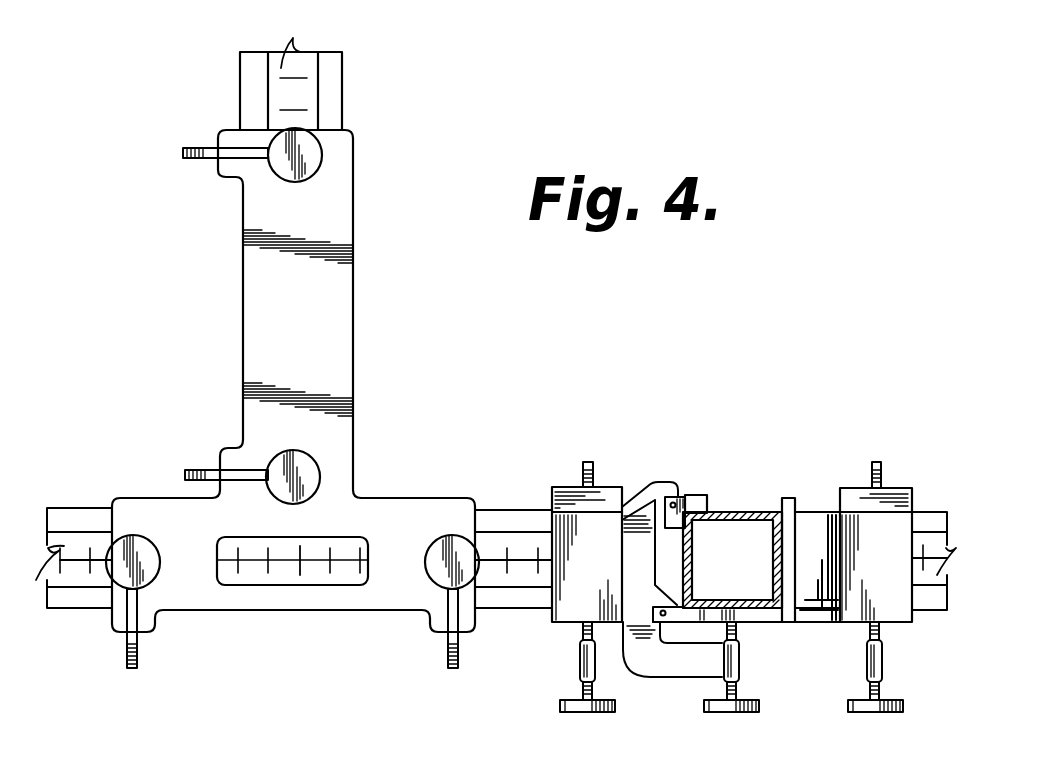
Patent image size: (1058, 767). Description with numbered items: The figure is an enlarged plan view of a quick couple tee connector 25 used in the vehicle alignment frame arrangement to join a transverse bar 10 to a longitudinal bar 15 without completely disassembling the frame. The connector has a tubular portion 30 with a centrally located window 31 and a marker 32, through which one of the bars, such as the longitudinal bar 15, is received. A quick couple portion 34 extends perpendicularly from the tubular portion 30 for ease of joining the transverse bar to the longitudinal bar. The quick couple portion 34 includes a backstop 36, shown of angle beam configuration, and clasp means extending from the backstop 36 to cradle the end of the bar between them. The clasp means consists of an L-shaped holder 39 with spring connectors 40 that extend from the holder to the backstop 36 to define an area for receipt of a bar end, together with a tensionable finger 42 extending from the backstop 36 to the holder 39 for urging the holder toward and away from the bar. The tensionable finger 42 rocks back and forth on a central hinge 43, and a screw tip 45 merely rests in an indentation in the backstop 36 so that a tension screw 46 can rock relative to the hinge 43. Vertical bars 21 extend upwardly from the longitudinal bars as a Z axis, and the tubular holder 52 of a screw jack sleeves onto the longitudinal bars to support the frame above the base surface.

The second transverse bar 10 is at (242, 96).
The longitudinal bar 15 is at (493, 612).
The vertical bar 21 is at (693, 562).
The quick couple tee connector 25 is at (355, 332).
The tubular portion 30 is at (424, 498).
The window 31 is at (322, 537).
The marker 32 is at (290, 546).
The quick couple portion 34 is at (796, 552).
The backstop 36 is at (796, 592).
The L-shaped holder 39 is at (558, 486).
The spring connector 40 is at (755, 498).
The tensionable finger 42 is at (200, 158).
The central hinge 43 is at (674, 618).
The screw tip 45 is at (580, 624).
The tension screw 46 is at (297, 182).
The tubular holder 52 is at (792, 624).